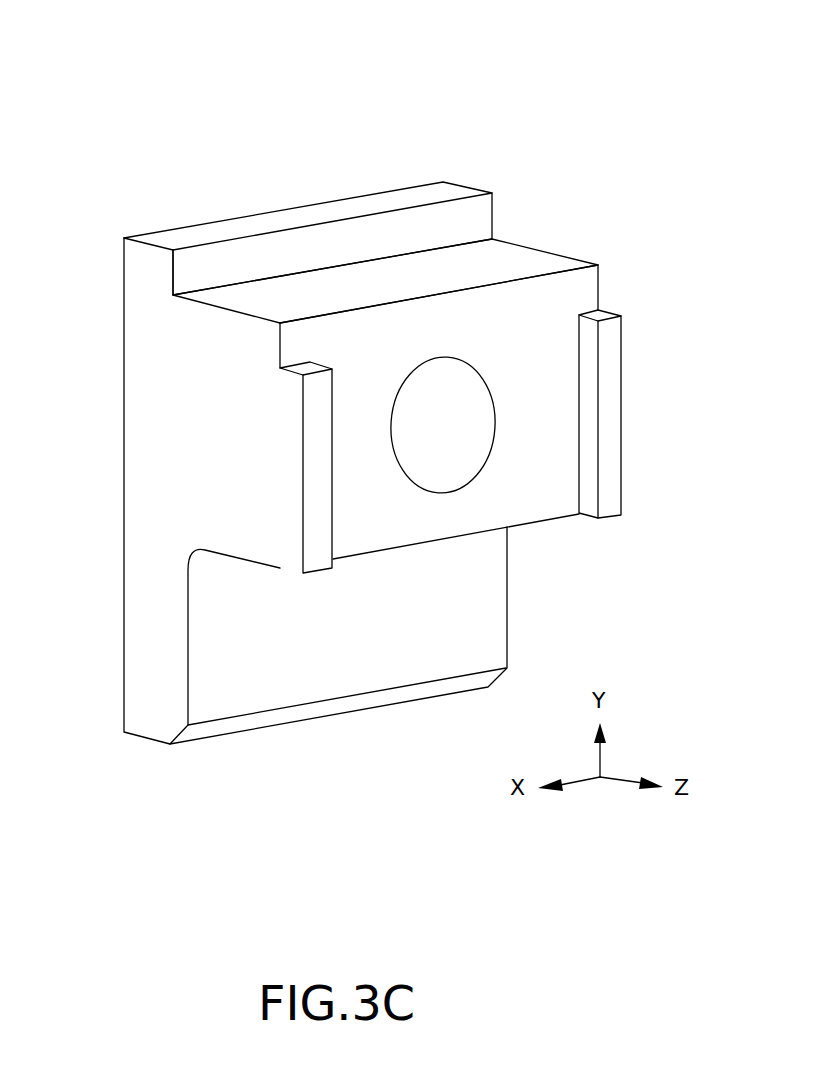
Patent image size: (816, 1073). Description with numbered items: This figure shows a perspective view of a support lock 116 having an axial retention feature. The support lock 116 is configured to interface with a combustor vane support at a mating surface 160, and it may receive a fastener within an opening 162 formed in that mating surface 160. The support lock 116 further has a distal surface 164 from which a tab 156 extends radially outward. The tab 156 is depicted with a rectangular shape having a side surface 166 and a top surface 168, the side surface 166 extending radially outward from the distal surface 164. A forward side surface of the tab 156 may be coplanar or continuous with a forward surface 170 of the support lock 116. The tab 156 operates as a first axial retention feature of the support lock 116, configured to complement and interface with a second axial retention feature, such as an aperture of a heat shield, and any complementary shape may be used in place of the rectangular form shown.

The support lock 116 is at (90, 118).
The tab 156 is at (496, 134).
The mating surface 160 is at (543, 356).
The opening 162 is at (475, 455).
The distal surface 164 is at (560, 252).
The side surface 166 is at (481, 214).
The top surface 168 is at (190, 235).
The forward surface 170 is at (124, 378).